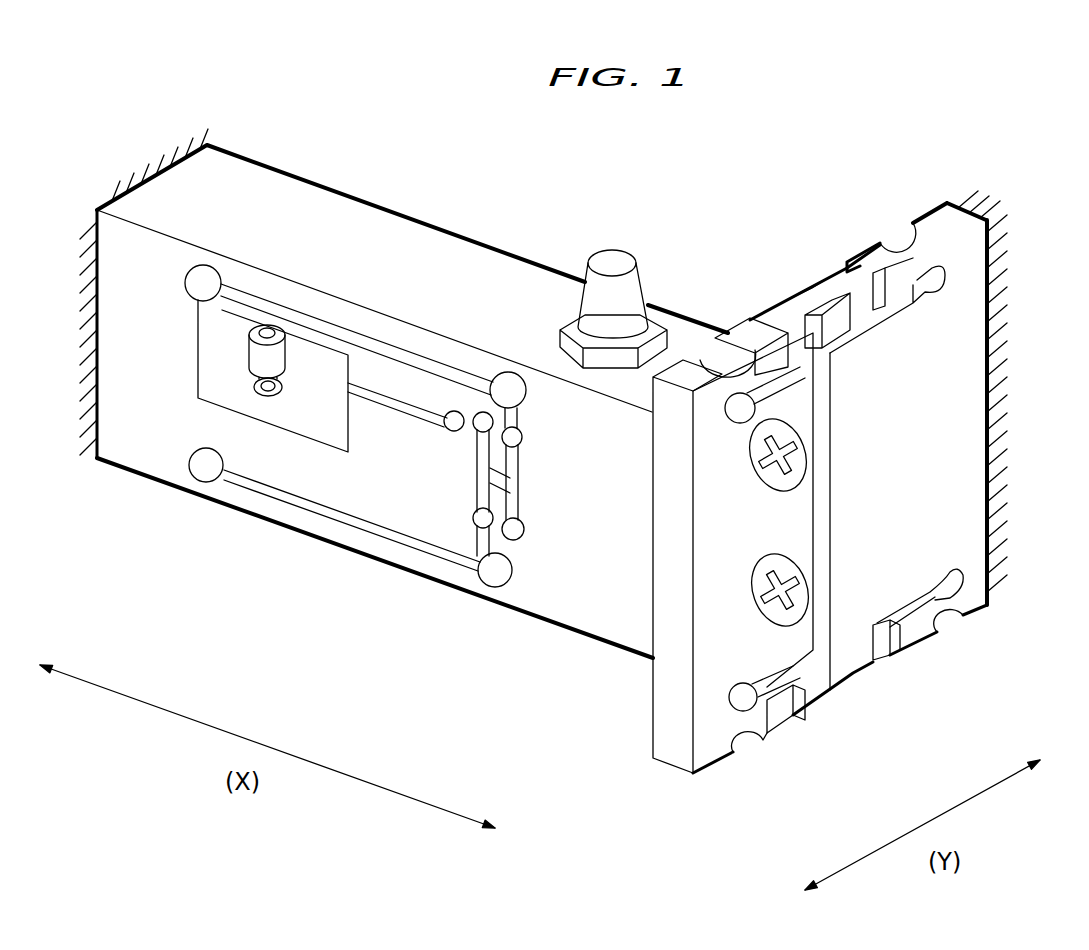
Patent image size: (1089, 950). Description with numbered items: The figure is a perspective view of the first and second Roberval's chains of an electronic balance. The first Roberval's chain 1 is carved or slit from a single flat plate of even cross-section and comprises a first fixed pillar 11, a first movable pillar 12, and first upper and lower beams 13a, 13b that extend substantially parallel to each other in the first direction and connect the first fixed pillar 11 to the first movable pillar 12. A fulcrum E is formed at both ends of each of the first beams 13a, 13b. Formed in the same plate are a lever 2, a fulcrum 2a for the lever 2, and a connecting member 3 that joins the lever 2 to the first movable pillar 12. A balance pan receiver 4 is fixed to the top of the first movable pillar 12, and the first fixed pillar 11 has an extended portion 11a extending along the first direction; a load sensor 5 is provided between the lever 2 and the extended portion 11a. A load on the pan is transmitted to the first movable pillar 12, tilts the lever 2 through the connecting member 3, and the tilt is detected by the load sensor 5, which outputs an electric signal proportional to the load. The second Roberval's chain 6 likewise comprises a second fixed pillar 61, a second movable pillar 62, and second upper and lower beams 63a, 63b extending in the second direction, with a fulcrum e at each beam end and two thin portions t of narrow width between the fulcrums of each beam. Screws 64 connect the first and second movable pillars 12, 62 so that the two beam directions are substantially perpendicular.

The first Roberval's chain 1 is at (215, 535).
The lever 2 is at (378, 370).
The fulcrum for the lever 2a is at (467, 430).
The connecting member 3 is at (497, 503).
The balance pan receiver 4 is at (627, 303).
The load sensor 5 is at (282, 360).
The second Roberval's chain 6 is at (831, 508).
The first fixed pillar 11 is at (118, 350).
The extended portion 11a is at (205, 430).
The first movable pillar 12 is at (585, 612).
The first upper beam 13a is at (448, 247).
The first lower beam 13b is at (303, 530).
The second fixed pillar 61 is at (960, 388).
The second movable pillar 62 is at (715, 528).
The second upper beam 63a is at (870, 235).
The second lower beam 63b is at (921, 658).
The screws 64 is at (770, 473).
The fulcrum E is at (195, 255).
The fulcrum e is at (921, 238).
The thin portion t is at (845, 280).